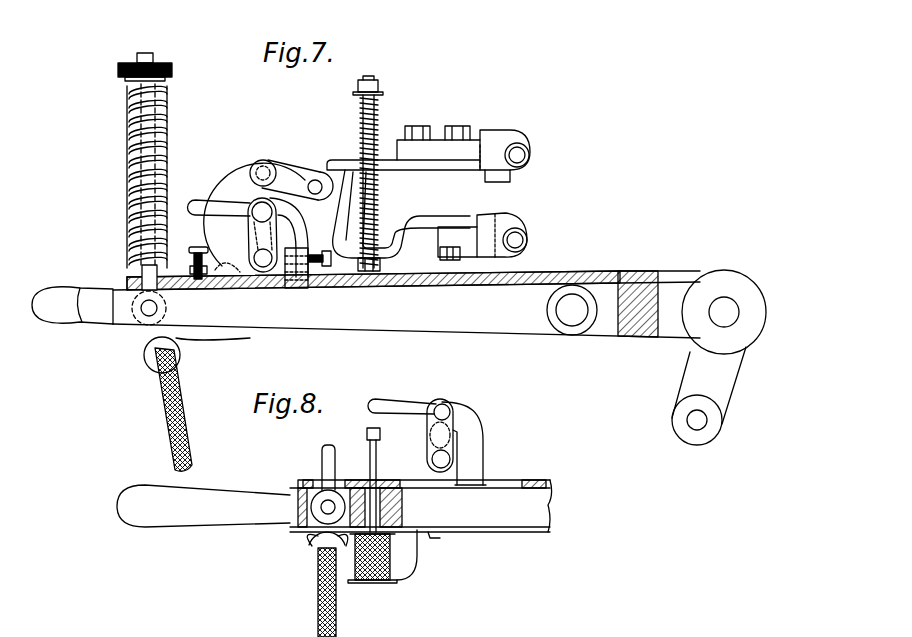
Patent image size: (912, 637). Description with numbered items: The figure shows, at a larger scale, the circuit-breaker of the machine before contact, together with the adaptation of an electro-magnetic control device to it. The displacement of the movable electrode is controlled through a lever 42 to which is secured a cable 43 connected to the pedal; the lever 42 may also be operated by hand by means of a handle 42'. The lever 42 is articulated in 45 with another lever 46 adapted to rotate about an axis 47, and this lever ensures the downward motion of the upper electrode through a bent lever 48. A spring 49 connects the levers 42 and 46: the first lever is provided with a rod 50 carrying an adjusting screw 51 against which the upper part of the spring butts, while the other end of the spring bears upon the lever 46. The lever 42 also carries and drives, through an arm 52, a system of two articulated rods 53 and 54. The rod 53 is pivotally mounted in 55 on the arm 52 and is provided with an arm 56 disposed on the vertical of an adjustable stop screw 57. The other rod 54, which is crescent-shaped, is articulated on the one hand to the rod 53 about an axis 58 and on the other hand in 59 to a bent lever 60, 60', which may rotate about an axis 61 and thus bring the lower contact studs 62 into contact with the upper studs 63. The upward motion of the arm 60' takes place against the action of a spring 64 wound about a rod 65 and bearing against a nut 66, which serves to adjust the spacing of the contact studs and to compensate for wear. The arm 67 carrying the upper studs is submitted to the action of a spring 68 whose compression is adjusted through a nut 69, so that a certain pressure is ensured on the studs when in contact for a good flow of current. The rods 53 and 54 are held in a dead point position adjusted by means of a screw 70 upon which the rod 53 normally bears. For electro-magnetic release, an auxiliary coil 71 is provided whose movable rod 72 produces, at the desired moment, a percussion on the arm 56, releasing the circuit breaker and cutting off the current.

In FIG. 7, the lever 42 is at (406, 317).
In FIG. 8, the lever 42 is at (421, 506).
In FIG. 7, the handle 42' is at (72, 320).
In FIG. 8, the handle 42' is at (203, 496).
In FIG. 7, the cable 43 is at (177, 407).
In FIG. 8, the cable 43 is at (333, 605).
In FIG. 7, the articulation 45 is at (572, 322).
In FIG. 7, the lever 46 is at (623, 276).
In FIG. 8, the lever 46 is at (535, 482).
In FIG. 7, the axis 47 is at (722, 300).
In FIG. 7, the bent lever 48 is at (718, 398).
In FIG. 7, the spring 49 is at (164, 110).
In FIG. 7, the rod 50 is at (150, 146).
In FIG. 7, the adjusting screw 51 is at (173, 71).
In FIG. 7, the arm 52 is at (295, 238).
In FIG. 8, the arm 52 is at (464, 443).
In FIG. 7, the rod 53 is at (248, 258).
In FIG. 8, the rod 53 is at (426, 438).
In FIG. 7, the crescent-shaped rod 54 is at (240, 186).
In FIG. 7, the pivot 55 is at (250, 225).
In FIG. 8, the pivot 55 is at (450, 412).
In FIG. 7, the arm 56 is at (204, 202).
In FIG. 8, the arm 56 is at (405, 402).
In FIG. 7, the adjustable stop screw 57 is at (208, 272).
In FIG. 7, the axis 58 is at (258, 272).
In FIG. 8, the axis 58 is at (430, 460).
In FIG. 7, the articulation 59 is at (268, 171).
In FIG. 8, the articulation 59 is at (322, 462).
In FIG. 7, the bent lever 60 is at (291, 180).
In FIG. 7, the arm of bent lever 60' is at (347, 206).
In FIG. 7, the axis 61 is at (315, 180).
In FIG. 7, the lower contact studs 62 is at (508, 222).
In FIG. 7, the upper contact studs 63 is at (520, 179).
In FIG. 7, the spring 64 is at (377, 212).
In FIG. 7, the rod 65 is at (378, 186).
In FIG. 7, the nut 66 is at (354, 172).
In FIG. 7, the arm 67 is at (447, 171).
In FIG. 7, the spring 68 is at (377, 118).
In FIG. 7, the nut 69 is at (384, 87).
In FIG. 7, the screw 70 is at (322, 268).
In FIG. 8, the auxiliary coil 71 is at (370, 584).
In FIG. 8, the movable rod 72 is at (372, 462).